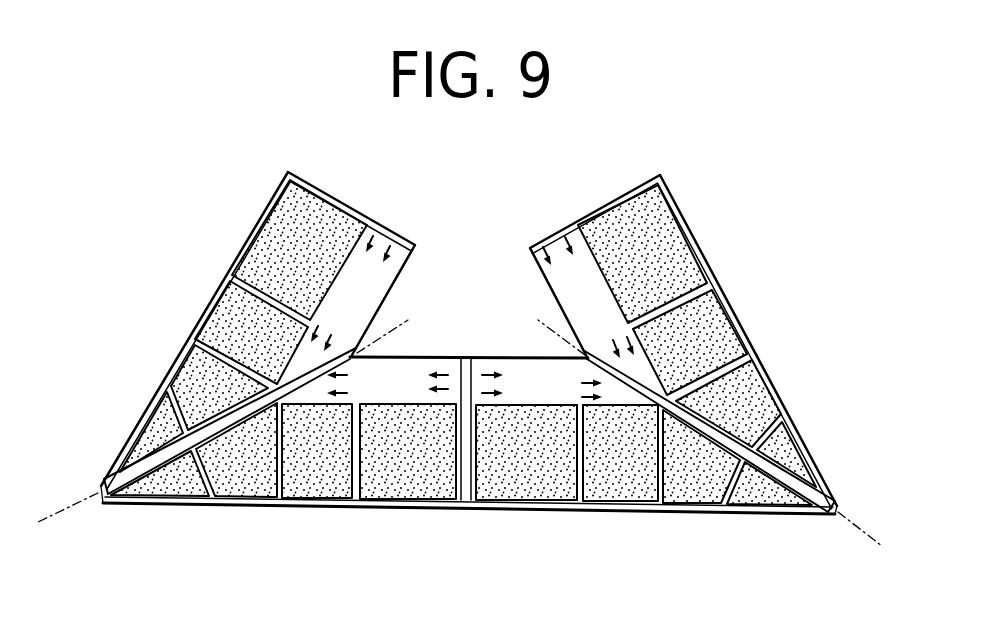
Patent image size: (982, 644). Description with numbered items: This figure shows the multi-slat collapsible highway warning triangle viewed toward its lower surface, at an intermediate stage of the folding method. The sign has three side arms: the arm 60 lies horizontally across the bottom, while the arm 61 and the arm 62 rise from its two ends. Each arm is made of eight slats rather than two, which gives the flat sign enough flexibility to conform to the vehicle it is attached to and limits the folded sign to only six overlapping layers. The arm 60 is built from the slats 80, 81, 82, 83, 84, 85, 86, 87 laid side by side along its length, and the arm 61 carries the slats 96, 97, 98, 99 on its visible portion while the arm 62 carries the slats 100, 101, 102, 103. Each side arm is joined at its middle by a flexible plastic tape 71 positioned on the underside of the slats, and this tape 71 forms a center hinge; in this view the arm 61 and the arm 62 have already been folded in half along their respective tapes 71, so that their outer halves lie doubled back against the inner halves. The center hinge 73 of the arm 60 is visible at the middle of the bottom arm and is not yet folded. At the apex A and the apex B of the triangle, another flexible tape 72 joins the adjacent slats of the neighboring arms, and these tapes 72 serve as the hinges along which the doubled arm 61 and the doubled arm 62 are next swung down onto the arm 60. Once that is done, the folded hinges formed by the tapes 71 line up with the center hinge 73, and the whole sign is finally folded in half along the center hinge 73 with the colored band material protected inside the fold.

The arm 60 is at (520, 524).
The arm 61 is at (806, 278).
The arm 62 is at (160, 308).
The flexible plastic tape 71 is at (378, 226).
The flexible tape 72 is at (364, 354).
The center hinge 73 is at (467, 503).
The slat 80 is at (163, 495).
The slat 81 is at (255, 495).
The slat 82 is at (318, 497).
The slat 83 is at (410, 497).
The slat 84 is at (557, 503).
The slat 85 is at (627, 505).
The slat 86 is at (703, 504).
The slat 87 is at (792, 511).
The slat 96 is at (690, 258).
The slat 97 is at (720, 338).
The slat 98 is at (767, 387).
The slat 99 is at (793, 447).
The slat 100 is at (150, 420).
The slat 101 is at (180, 370).
The slat 102 is at (218, 293).
The slat 103 is at (262, 235).
The apex A is at (838, 510).
The apex B is at (100, 491).